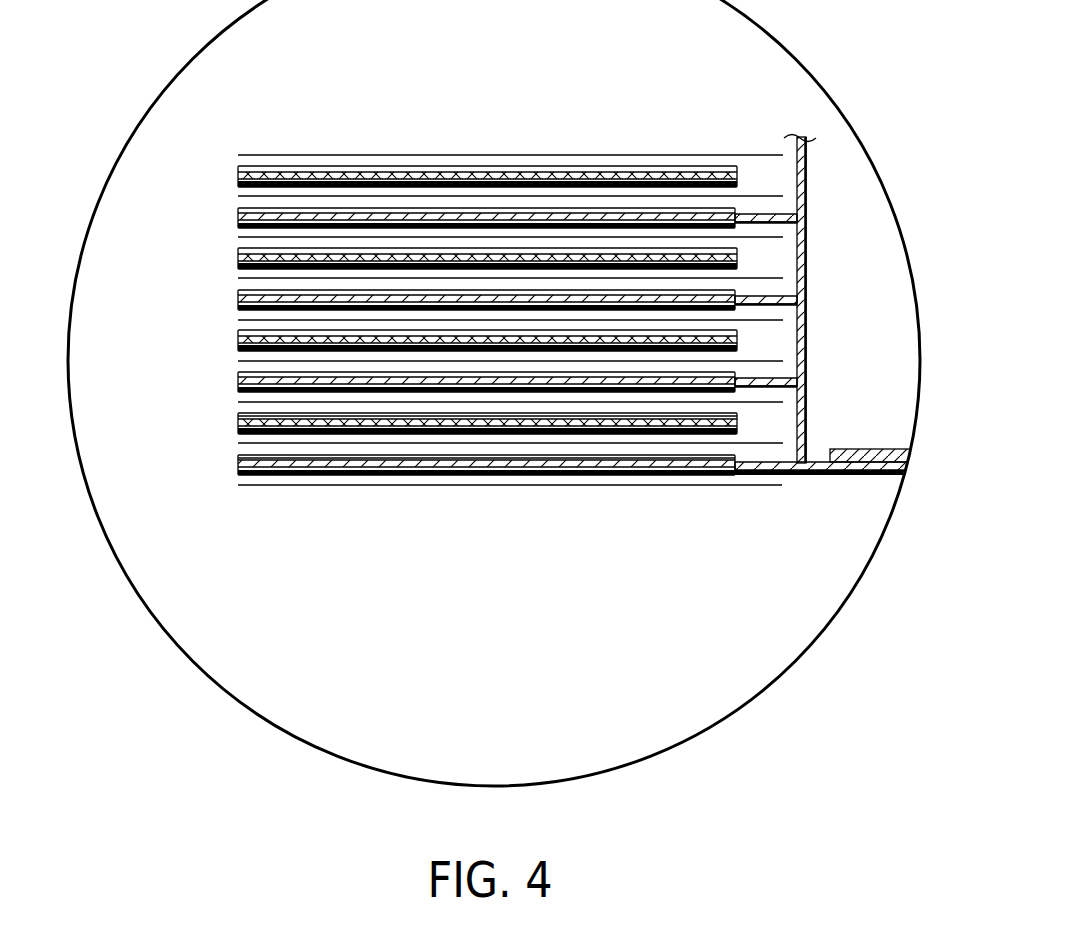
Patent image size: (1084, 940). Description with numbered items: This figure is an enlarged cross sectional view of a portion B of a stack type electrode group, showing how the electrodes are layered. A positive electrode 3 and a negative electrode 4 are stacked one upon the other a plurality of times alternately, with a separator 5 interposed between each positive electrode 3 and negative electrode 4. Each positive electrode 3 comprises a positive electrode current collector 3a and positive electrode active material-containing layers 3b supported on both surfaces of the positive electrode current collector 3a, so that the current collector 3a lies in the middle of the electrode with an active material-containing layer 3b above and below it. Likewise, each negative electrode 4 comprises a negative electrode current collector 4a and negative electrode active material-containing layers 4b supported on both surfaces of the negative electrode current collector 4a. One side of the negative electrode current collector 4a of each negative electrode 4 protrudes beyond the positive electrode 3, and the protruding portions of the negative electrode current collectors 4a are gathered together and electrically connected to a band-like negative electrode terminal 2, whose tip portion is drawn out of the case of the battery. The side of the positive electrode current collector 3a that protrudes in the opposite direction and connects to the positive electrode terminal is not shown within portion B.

The negative electrode terminal 2 is at (858, 476).
The positive electrode 3 is at (222, 176).
The positive electrode current collector 3a is at (238, 423).
The positive electrode active material-containing layers 3b is at (238, 414).
The negative electrode 4 is at (222, 218).
The negative electrode current collector 4a is at (775, 219).
The negative electrode active material-containing layers 4b is at (236, 458).
The separator 5 is at (582, 154).
The portion B is at (783, 673).